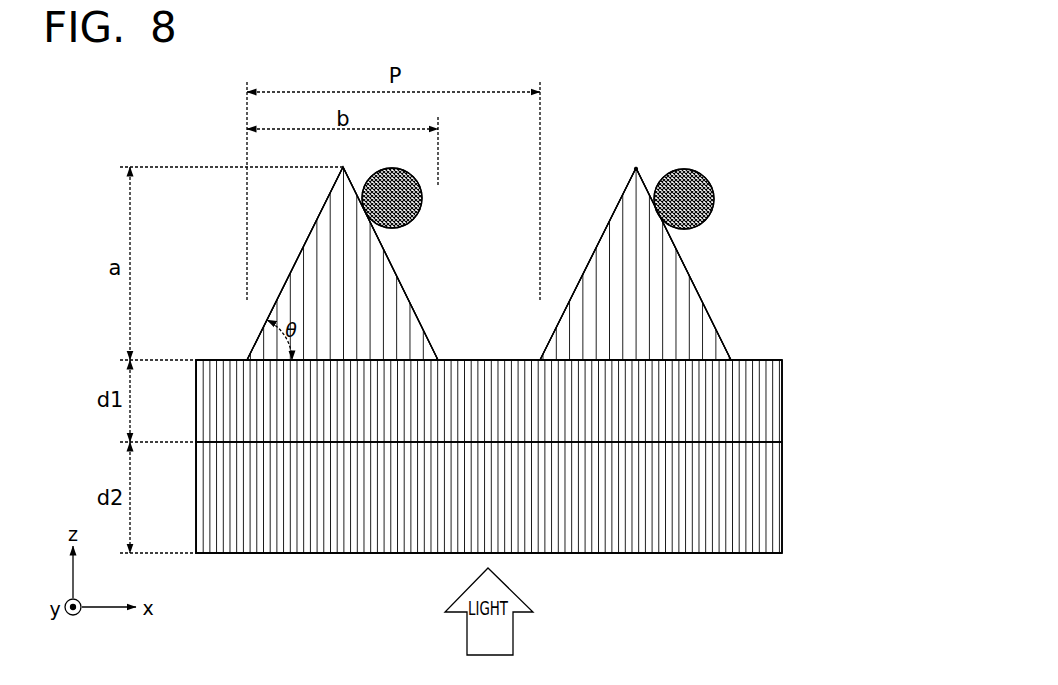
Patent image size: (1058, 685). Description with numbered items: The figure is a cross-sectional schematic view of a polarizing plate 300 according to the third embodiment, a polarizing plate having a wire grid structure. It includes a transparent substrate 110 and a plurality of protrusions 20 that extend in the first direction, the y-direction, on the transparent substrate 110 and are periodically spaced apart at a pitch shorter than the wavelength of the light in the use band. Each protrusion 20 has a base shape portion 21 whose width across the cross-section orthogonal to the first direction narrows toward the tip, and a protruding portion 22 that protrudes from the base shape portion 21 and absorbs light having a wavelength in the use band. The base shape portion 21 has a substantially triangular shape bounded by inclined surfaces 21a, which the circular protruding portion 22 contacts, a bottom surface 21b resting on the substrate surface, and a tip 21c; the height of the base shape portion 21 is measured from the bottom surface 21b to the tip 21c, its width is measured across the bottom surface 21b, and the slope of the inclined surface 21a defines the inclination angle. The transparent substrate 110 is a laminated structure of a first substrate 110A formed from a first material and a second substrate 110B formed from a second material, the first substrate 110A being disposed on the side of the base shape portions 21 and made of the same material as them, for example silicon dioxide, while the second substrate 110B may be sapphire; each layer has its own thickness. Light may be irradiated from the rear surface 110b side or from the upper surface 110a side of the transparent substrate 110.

The polarizing plate 300 is at (798, 110).
The protrusion 20 is at (480, 170).
The base shape portion 21 is at (395, 290).
The protruding portion 22 is at (421, 197).
The inclined surface 21a is at (276, 303).
The bottom surface 21b is at (348, 361).
The tip 21c is at (636, 166).
The transparent substrate 110 is at (848, 382).
The first substrate 110A is at (762, 402).
The second substrate 110B is at (762, 500).
The upper surface 110a is at (752, 360).
The rear surface 110b is at (752, 553).